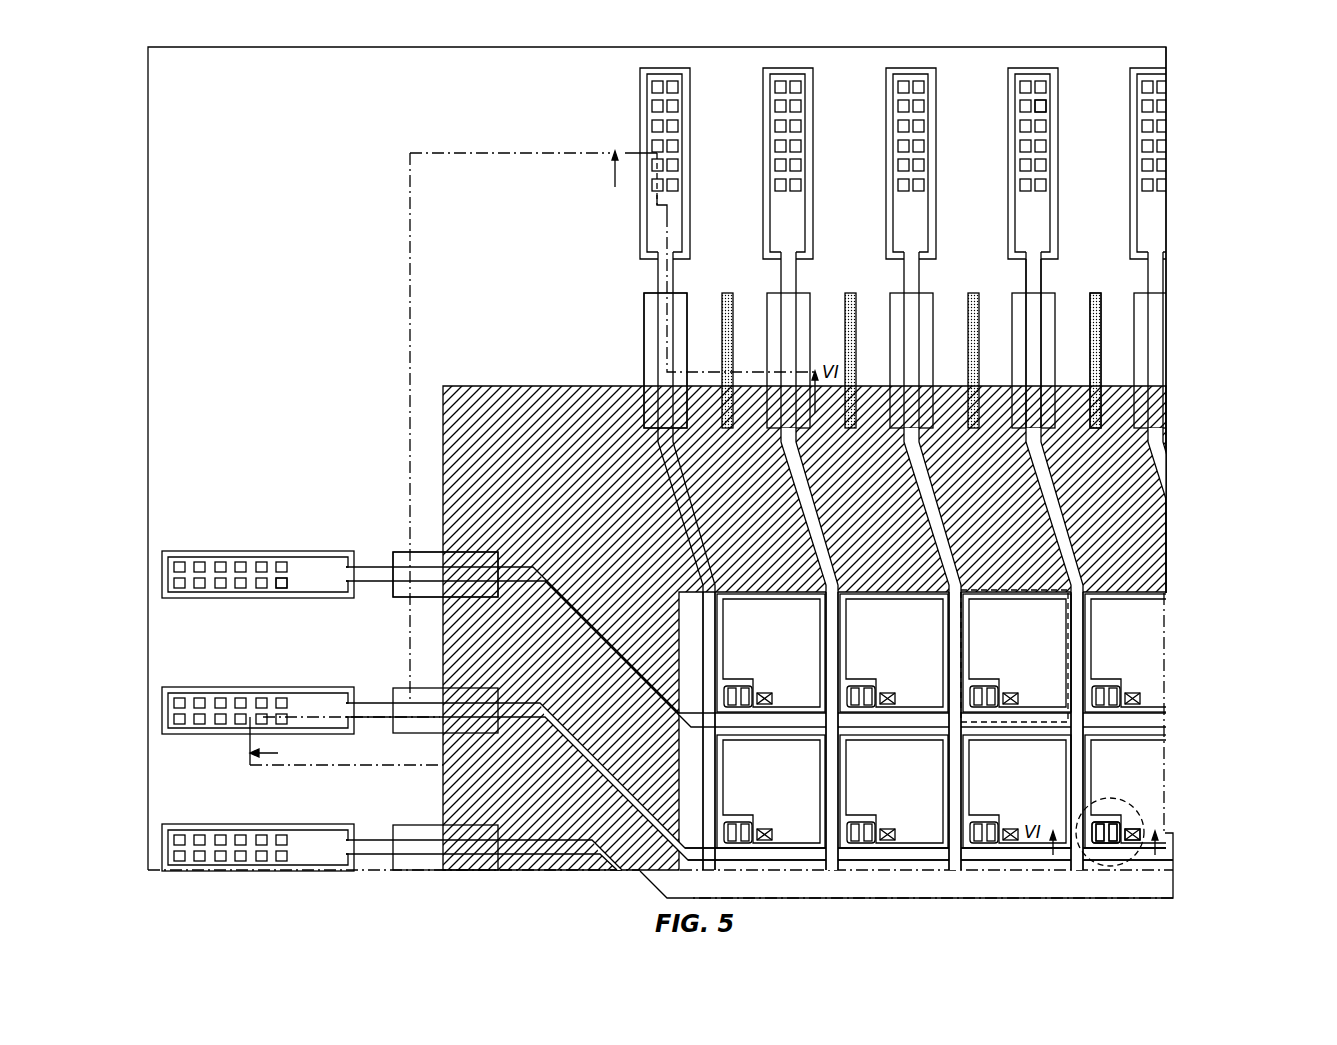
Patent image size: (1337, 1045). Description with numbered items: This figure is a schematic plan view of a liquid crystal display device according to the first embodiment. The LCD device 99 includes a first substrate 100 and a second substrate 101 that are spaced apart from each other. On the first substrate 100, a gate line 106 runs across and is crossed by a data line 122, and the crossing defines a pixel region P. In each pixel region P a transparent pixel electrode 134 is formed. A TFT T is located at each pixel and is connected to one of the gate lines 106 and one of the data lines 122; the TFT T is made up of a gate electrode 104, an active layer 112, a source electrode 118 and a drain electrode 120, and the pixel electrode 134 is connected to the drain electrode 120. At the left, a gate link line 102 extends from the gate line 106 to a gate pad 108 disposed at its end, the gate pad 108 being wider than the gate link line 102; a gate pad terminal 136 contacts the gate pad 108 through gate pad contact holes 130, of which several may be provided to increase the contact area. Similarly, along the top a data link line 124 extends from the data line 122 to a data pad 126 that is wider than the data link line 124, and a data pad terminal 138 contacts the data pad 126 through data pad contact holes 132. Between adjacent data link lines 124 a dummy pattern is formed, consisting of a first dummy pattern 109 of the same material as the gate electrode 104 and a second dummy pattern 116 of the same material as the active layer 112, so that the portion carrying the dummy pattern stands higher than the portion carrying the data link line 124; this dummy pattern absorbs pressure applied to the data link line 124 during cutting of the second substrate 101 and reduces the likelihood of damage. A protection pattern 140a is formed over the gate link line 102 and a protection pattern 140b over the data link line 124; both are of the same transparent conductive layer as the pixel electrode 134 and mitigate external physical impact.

The LCD device 99 is at (1176, 168).
The first substrate 100 is at (148, 179).
The second substrate 101 is at (468, 386).
The gate link line 102 is at (372, 558).
The gate electrode 104 is at (1104, 820).
The gate line 106 is at (1174, 858).
The gate pad 108 is at (318, 552).
The first dummy pattern 109 is at (1197, 360).
The active layer 112 is at (1113, 846).
The second dummy pattern 116 is at (1105, 336).
The source electrode 118 is at (1100, 846).
The drain electrode 120 is at (1140, 822).
The data line 122 is at (1080, 742).
The data link line 124 is at (1042, 283).
The data pad 126 is at (1054, 157).
The gate pad contact hole 130 is at (287, 592).
The data pad contact hole 132 is at (1050, 112).
The pixel electrode 134 is at (1016, 850).
The gate pad terminal 136 is at (330, 533).
The data pad terminal 138 is at (1062, 469).
The protection pattern 140a is at (480, 552).
The protection pattern 140b is at (644, 356).
The pixel region P is at (1072, 652).
The TFT T is at (1130, 800).